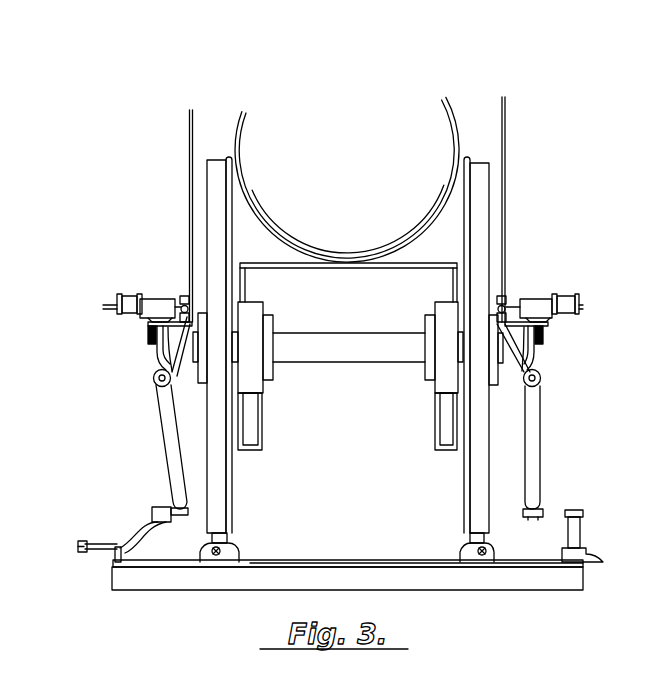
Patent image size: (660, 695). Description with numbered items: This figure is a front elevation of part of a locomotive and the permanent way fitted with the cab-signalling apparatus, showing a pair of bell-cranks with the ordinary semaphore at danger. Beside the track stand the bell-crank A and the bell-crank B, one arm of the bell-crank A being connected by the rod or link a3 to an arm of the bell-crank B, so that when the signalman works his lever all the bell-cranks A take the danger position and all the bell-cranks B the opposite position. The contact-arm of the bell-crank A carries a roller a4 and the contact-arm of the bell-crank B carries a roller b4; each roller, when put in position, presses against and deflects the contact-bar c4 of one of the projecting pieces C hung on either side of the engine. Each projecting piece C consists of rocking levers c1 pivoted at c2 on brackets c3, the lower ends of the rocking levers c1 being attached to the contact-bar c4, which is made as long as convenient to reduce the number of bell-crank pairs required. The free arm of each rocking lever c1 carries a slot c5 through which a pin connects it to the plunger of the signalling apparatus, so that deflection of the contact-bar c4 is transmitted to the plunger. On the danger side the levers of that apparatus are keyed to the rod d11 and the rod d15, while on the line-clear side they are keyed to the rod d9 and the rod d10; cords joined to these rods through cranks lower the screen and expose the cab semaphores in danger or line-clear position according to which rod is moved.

The rod or link a3 is at (364, 561).
The roller a4 is at (152, 512).
The bell-crank A is at (99, 535).
The roller b4 is at (568, 512).
The bell-crank B is at (583, 540).
The projecting piece C is at (342, 375).
The rocking lever c1 is at (168, 468).
The pivot c2 is at (153, 378).
The bracket c3 is at (157, 338).
The contact-bar c4 is at (173, 515).
The slot c5 is at (182, 296).
The rod d9 is at (559, 297).
The rod d10 is at (569, 297).
The rod d11 is at (137, 300).
The rod d15 is at (128, 301).